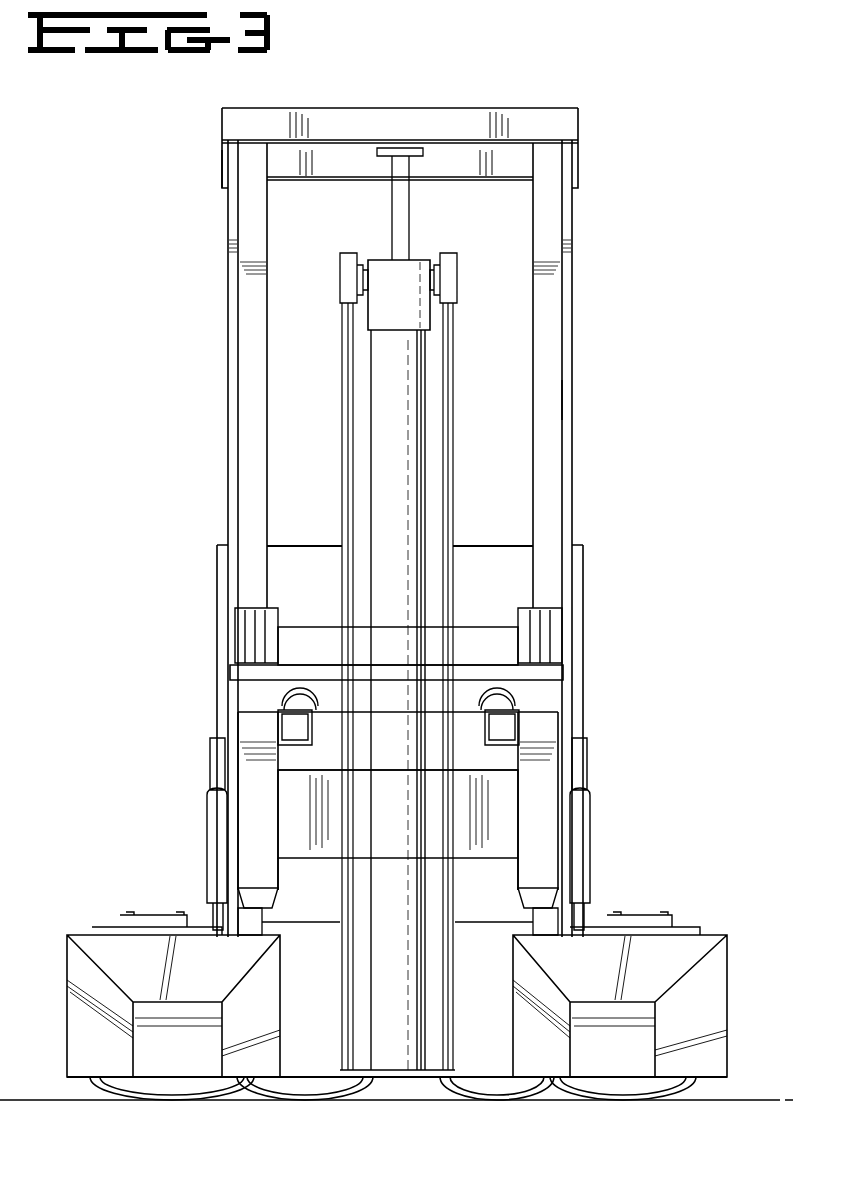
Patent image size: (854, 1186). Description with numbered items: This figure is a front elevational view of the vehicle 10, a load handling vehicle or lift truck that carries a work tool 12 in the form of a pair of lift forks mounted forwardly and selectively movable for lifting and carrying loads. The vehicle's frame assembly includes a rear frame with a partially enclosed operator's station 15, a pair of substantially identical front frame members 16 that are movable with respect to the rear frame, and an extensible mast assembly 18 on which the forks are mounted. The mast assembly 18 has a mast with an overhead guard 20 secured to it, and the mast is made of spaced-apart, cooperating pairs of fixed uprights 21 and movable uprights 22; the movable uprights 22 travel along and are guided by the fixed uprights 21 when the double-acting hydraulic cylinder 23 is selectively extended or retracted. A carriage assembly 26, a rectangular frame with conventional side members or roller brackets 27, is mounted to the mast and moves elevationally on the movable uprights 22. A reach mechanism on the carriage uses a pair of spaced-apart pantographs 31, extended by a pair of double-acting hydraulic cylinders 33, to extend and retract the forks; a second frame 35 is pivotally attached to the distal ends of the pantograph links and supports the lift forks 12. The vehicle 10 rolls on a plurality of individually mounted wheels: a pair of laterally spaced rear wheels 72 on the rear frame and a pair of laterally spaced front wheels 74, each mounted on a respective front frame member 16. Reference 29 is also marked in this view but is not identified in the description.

The vehicle 10 is at (131, 402).
The work tool 12 is at (250, 893).
The operator's station 15 is at (585, 568).
The front frame members 16 is at (222, 983).
The mast assembly 18 is at (591, 401).
The overhead guard 20 is at (507, 104).
The fixed uprights 21 is at (228, 292).
The movable uprights 22 is at (250, 322).
The double-acting hydraulic cylinder 23 is at (405, 456).
The carriage assembly 26 is at (307, 633).
The roller brackets 27 is at (273, 628).
The frame corner 29 is at (220, 200).
The pantographs 31 is at (263, 648).
The double-acting hydraulic cylinders 33 is at (290, 686).
The second frame 35 is at (412, 830).
The rear wheels 72 is at (290, 1094).
The front wheels 74 is at (204, 1094).